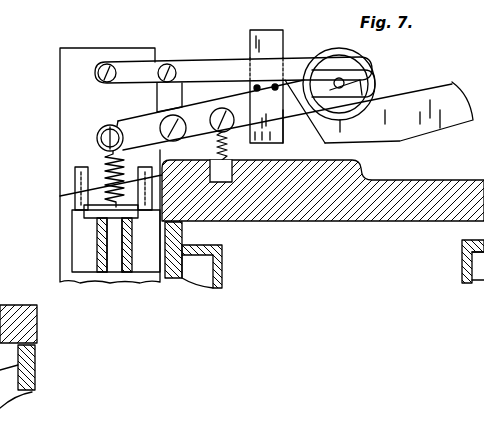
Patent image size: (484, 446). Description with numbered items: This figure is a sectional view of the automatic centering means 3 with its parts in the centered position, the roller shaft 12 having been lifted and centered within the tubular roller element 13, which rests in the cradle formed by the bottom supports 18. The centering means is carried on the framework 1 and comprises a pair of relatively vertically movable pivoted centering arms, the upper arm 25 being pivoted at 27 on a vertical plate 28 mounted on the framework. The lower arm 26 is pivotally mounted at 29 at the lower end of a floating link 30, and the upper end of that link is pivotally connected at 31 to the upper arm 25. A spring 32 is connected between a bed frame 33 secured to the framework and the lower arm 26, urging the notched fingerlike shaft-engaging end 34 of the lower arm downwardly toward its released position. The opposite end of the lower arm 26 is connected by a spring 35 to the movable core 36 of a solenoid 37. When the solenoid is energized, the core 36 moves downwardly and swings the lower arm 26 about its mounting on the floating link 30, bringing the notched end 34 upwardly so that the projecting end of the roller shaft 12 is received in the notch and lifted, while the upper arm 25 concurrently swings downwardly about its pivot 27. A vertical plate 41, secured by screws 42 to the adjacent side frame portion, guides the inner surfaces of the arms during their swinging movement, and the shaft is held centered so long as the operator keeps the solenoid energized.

The framework 1 is at (35, 372).
The automatic centering means 3 is at (255, 30).
The roller shaft 12 is at (344, 81).
The tubular roller element 13 is at (342, 50).
The bottom supports 18 is at (444, 128).
The upper centering arm 25 is at (205, 60).
The lower centering arm 26 is at (245, 128).
The pivot 27 is at (106, 64).
The vertical plate 28 is at (60, 90).
The pivot 29 is at (160, 128).
The floating link 30 is at (188, 100).
The pivot 31 is at (168, 64).
The spring 32 is at (232, 163).
The bed frame 33 is at (369, 207).
The notched fingerlike shaft-engaging end 34 is at (355, 90).
The spring 35 is at (107, 188).
The movable core 36 is at (113, 260).
The solenoid 37 is at (77, 247).
The vertical plate 41 is at (284, 47).
The screw 42 is at (274, 115).